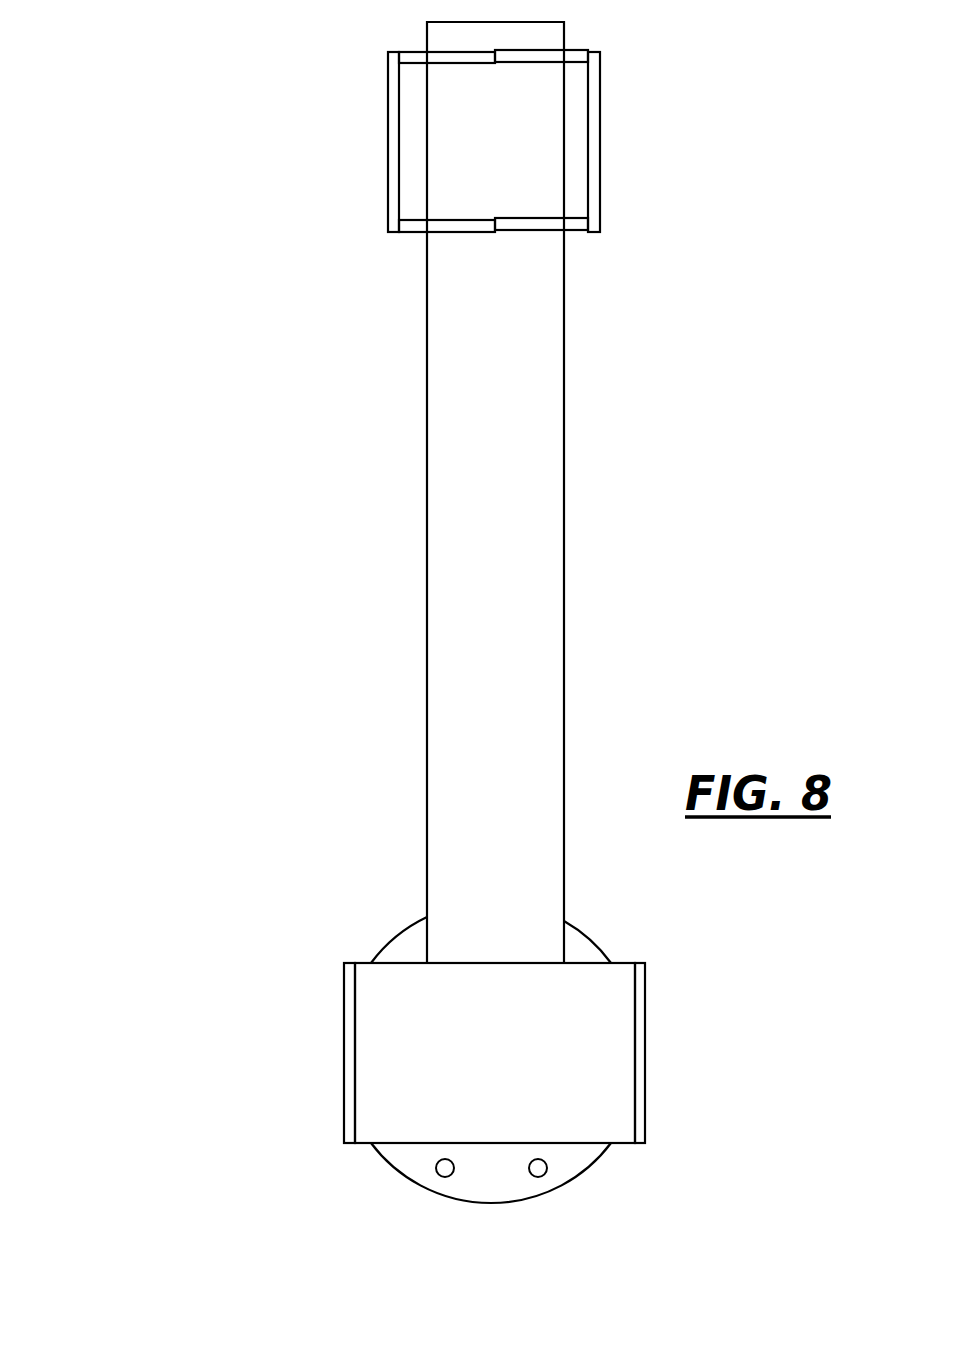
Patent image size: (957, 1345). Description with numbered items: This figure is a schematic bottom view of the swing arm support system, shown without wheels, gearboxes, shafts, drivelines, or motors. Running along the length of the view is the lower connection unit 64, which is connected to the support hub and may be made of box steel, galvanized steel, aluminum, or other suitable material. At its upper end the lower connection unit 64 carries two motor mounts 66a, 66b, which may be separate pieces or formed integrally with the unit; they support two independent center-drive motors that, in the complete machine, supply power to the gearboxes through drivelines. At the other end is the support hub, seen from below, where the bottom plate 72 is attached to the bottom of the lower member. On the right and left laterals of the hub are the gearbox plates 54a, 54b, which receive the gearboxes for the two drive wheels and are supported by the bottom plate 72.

The lower connection unit 64 is at (472, 590).
The motor mount 66a is at (394, 137).
The motor mount 66b is at (597, 148).
The bottom plate 72 is at (437, 1052).
The gearbox plate 54a is at (346, 1053).
The gearbox plate 54b is at (638, 1053).